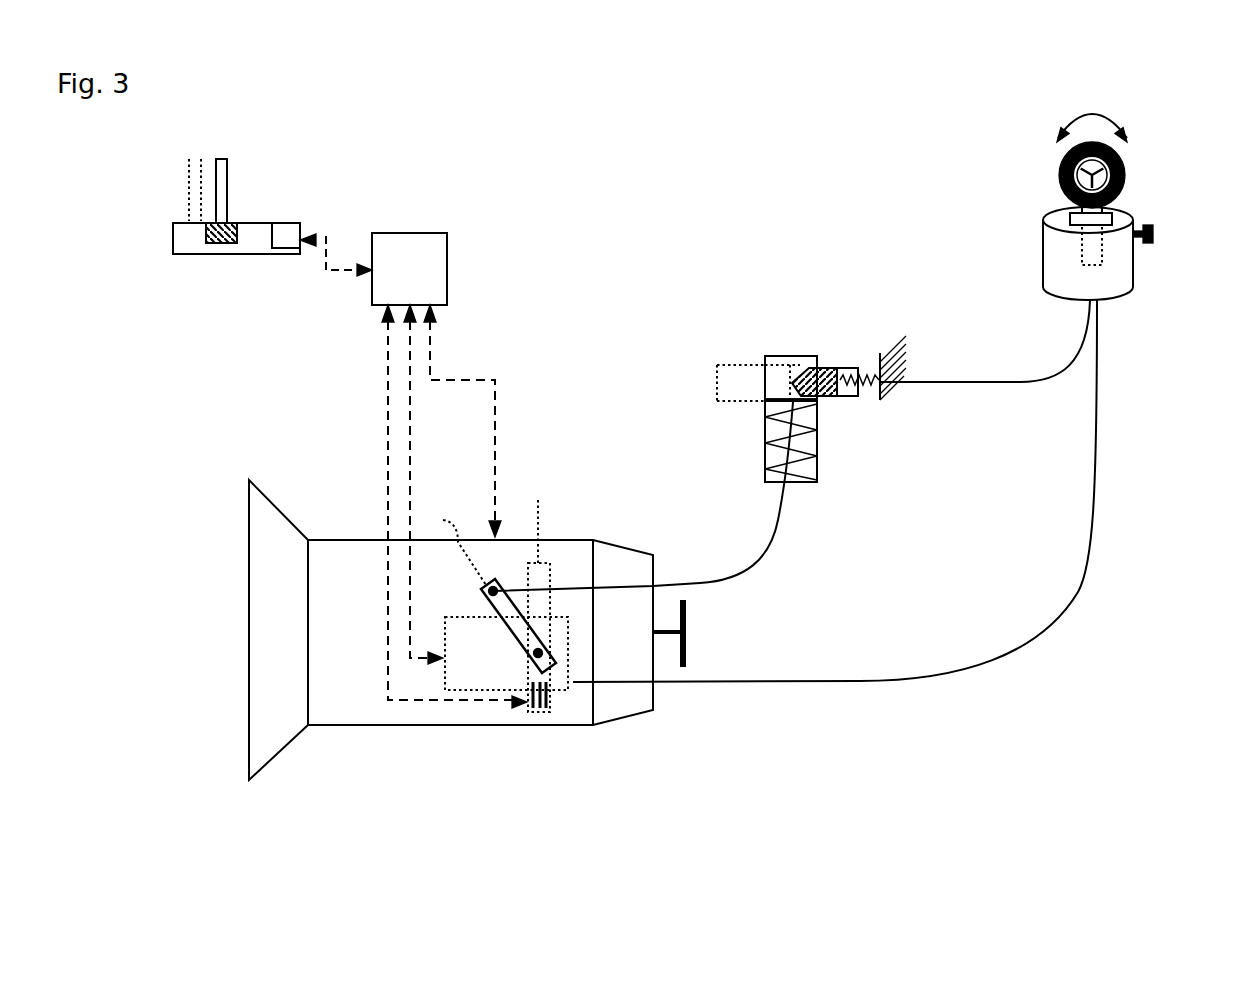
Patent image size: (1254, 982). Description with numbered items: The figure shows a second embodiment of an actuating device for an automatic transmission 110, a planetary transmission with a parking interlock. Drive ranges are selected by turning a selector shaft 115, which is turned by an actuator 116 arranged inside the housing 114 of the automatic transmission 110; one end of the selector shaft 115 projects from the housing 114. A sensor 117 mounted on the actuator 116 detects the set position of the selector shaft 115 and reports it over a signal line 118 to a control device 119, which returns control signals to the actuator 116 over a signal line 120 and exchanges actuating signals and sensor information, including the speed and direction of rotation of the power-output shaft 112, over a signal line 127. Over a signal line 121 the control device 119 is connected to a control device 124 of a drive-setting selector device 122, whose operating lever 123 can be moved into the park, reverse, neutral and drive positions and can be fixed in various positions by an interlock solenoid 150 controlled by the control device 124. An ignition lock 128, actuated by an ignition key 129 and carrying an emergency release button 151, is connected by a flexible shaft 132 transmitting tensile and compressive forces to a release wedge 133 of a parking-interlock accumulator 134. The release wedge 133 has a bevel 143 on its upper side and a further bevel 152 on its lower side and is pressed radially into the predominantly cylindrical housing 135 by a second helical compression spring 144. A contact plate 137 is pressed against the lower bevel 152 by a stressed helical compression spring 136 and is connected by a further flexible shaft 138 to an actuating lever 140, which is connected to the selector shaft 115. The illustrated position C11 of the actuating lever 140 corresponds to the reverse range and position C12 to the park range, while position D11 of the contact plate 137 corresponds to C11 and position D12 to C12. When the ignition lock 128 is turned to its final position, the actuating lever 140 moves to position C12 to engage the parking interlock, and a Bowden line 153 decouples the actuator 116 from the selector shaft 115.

The automatic transmission 110 is at (360, 658).
The power-output shaft 112 is at (660, 637).
The housing 114 is at (330, 725).
The selector shaft 115 is at (532, 680).
The actuator 116 is at (459, 709).
The sensor 117 is at (549, 701).
The signal line 118 is at (388, 413).
The control device 119 is at (409, 269).
The signal line 120 is at (410, 388).
The signal line 121 is at (326, 233).
The drive-setting selector device 122 is at (212, 166).
The operating lever 123 is at (228, 172).
The control device 124 is at (277, 222).
The signal line 127 is at (430, 347).
The ignition lock 128 is at (1124, 196).
The ignition key 129 is at (1055, 160).
The flexible shaft 132 is at (1040, 376).
The release wedge 133 is at (817, 402).
The parking-interlock accumulator 134 is at (818, 518).
The housing 135 is at (803, 483).
The helical compression spring 136 is at (817, 482).
The contact plate 137 is at (817, 407).
The flexible shaft 138 is at (762, 567).
The actuating lever 140 is at (502, 627).
The bevel 143 is at (806, 367).
The second helical compression spring 144 is at (858, 398).
The interlock solenoid 150 is at (206, 230).
The emergency release button 151 is at (1153, 235).
The bevel 152 is at (793, 402).
The Bowden line 153 is at (947, 672).
The position of the actuating lever C11 is at (443, 520).
The position of the actuating lever C12 is at (538, 500).
The position of the contact plate D11 is at (721, 400).
The position of the contact plate D12 is at (733, 367).